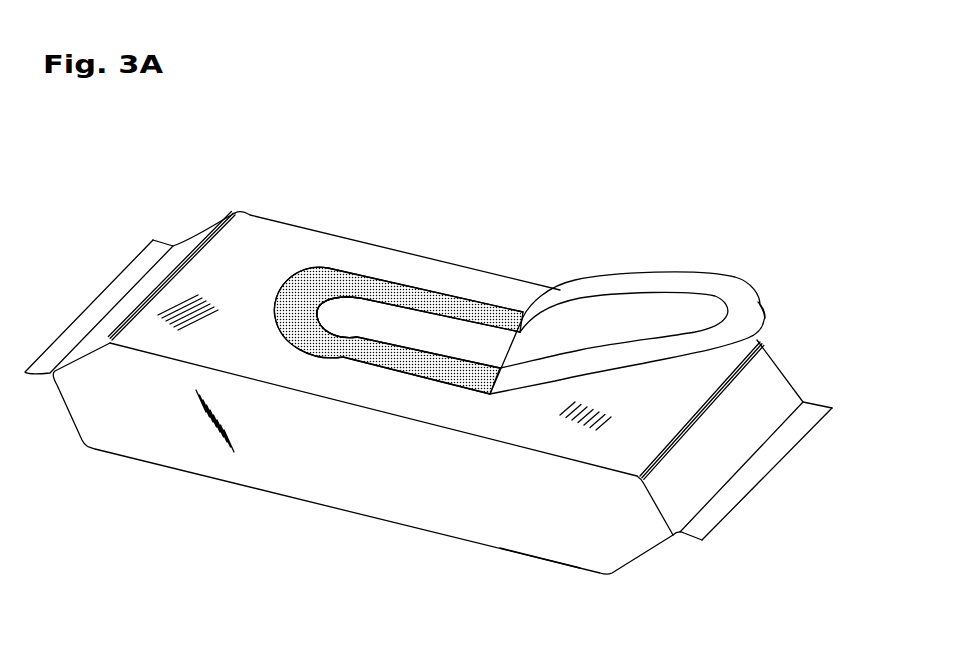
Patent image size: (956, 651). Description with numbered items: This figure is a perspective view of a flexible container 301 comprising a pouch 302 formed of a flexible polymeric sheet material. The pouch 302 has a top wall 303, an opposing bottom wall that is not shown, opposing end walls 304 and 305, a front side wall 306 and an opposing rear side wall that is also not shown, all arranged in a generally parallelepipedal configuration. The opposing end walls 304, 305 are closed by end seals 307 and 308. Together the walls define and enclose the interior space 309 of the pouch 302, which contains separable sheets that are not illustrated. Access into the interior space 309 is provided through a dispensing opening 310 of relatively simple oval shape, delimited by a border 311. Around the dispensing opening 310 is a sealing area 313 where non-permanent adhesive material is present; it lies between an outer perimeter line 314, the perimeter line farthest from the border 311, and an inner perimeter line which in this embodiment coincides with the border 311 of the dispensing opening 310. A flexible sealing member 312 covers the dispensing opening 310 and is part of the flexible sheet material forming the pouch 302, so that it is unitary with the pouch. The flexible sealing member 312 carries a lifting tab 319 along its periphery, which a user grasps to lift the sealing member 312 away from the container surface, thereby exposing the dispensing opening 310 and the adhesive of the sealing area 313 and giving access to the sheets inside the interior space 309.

The flexible container 301 is at (115, 218).
The pouch 302 is at (113, 455).
The top wall 303 is at (250, 228).
The end wall 304 is at (130, 308).
The end wall 305 is at (780, 388).
The front side wall 306 is at (334, 483).
The end seal 307 is at (67, 342).
The end seal 308 is at (738, 488).
The interior space 309 is at (543, 500).
The dispensing opening 310 is at (367, 318).
The border 311 is at (414, 307).
The flexible sealing member 312 is at (719, 284).
The sealing area 313 is at (474, 311).
The outer perimeter line 314 is at (333, 268).
The lifting tab 319 is at (768, 313).